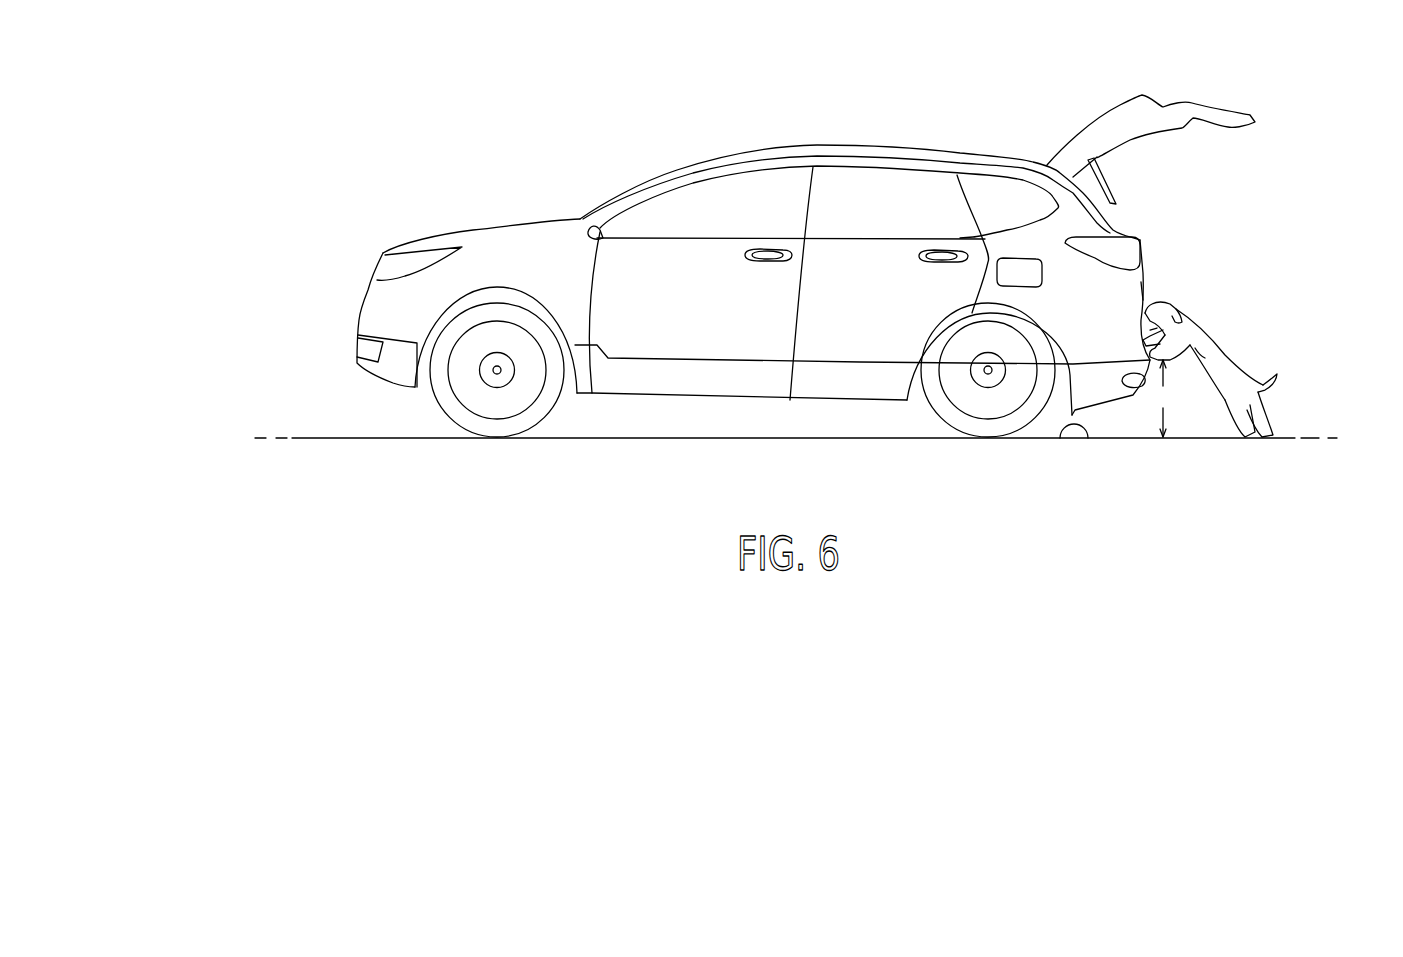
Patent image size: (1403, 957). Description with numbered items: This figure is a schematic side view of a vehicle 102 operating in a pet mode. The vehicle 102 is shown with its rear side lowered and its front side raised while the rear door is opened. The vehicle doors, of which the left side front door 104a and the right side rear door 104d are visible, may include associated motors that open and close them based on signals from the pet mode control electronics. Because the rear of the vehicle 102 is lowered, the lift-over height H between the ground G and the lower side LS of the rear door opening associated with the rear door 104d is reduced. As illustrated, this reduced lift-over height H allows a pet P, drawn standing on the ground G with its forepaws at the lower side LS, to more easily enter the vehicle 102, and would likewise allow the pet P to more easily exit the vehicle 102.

The vehicle 102 is at (763, 241).
The left side front door 104a is at (358, 317).
The right side rear door 104d is at (1143, 288).
The lower side of the rear door opening LS is at (1157, 328).
The pet P is at (1210, 353).
The lift-over height H is at (1164, 398).
The ground G is at (1060, 438).